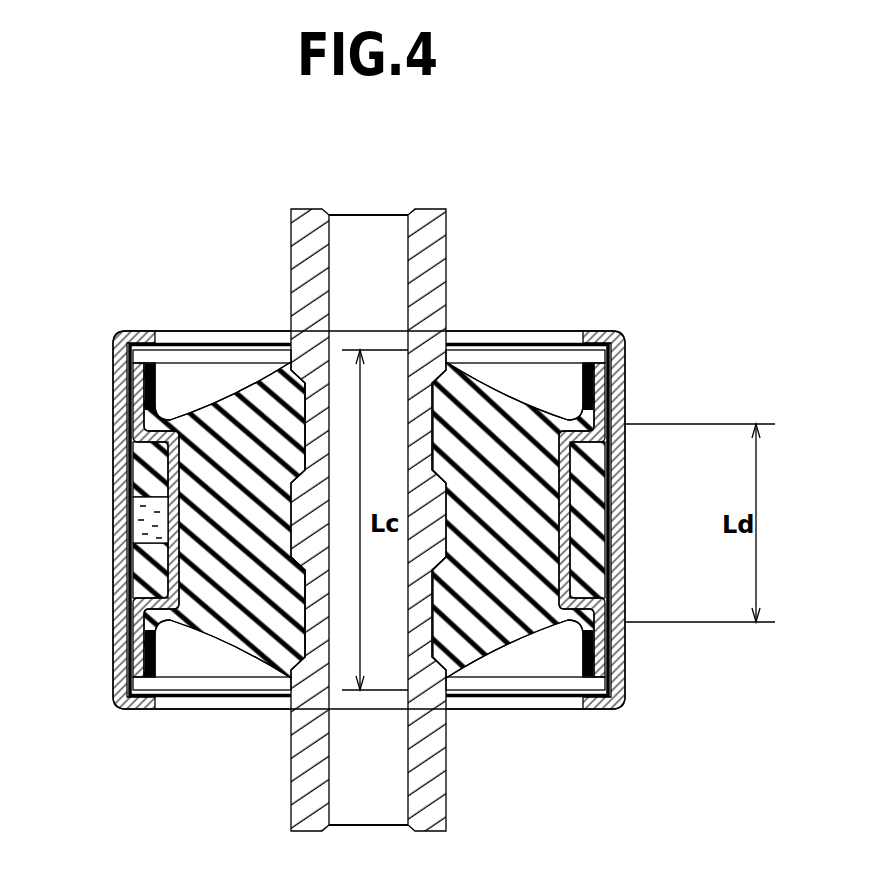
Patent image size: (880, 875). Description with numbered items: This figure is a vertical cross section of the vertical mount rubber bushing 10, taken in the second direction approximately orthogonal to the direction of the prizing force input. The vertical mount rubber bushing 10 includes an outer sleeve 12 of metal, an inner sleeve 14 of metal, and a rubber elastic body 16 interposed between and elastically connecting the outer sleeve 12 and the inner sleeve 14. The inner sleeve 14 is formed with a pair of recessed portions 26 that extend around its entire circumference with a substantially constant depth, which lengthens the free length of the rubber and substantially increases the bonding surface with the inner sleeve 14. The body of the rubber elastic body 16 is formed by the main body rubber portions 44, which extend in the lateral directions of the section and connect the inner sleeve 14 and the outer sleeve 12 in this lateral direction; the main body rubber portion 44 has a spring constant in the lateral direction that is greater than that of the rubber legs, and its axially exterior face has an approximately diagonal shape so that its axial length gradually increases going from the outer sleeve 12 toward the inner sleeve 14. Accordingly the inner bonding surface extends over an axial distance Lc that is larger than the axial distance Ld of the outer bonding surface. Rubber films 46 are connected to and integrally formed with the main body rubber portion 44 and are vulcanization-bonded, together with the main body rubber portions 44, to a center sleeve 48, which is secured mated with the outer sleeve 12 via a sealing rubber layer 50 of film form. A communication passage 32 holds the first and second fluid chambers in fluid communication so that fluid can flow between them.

The vertical mount rubber bushing 10 is at (212, 248).
The outer sleeve 12 is at (632, 353).
The inner sleeve 14 is at (460, 236).
The rubber elastic body 16 is at (493, 381).
The recessed portions 26 is at (437, 428).
The communication passage 32 is at (150, 503).
The main body rubber portion 44 is at (548, 470).
The rubber films 46 is at (155, 383).
The center sleeve 48 is at (568, 512).
The sealing rubber layer 50 is at (627, 378).